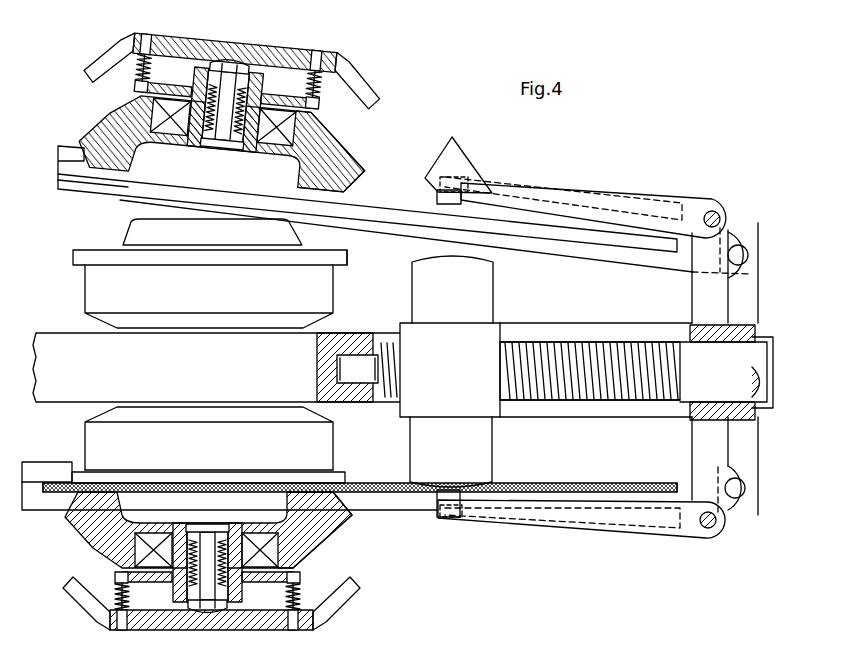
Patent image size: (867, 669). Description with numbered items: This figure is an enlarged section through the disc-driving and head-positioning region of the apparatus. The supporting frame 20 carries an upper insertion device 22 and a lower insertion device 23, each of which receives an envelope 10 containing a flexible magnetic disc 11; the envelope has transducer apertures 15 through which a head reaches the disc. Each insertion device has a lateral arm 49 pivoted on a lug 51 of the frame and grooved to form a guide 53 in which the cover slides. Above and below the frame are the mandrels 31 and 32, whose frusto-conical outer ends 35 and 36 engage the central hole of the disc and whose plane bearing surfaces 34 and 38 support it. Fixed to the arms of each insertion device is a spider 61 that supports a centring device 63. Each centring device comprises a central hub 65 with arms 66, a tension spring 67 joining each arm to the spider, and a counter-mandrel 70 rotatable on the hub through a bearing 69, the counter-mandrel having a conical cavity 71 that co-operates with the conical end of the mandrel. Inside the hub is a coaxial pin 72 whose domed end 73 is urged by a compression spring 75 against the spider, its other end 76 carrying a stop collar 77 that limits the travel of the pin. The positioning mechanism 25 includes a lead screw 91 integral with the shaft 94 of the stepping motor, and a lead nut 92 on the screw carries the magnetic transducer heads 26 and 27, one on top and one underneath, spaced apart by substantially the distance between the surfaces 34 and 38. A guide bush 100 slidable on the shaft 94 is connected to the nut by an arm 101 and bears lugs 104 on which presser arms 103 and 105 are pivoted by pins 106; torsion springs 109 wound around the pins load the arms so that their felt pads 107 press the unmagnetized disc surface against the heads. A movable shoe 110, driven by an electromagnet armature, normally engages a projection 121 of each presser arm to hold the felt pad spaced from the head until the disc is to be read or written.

The envelope 10 is at (662, 482).
The magnetic disc 11 is at (567, 481).
The transducer apertures 15 is at (643, 497).
The supporting frame 20 is at (50, 347).
The insertion device 22 is at (56, 136).
The insertion device 23 is at (41, 455).
The positioning mechanism 25 is at (690, 184).
The magnetic transducer head 26 is at (487, 273).
The magnetic transducer head 27 is at (482, 437).
The mandrel 31 is at (90, 258).
The mandrel 32 is at (80, 478).
The plane bearing surface 34 is at (348, 253).
The outer end 35 is at (293, 233).
The outer end 36 is at (130, 498).
The plane bearing surface 38 is at (315, 482).
The lateral arm 49 is at (393, 231).
The lug 51 is at (765, 255).
The guide 53 is at (60, 176).
The spider 61 is at (160, 631).
The centring device 63 is at (253, 335).
The central hub 65 is at (240, 525).
The arm 66 is at (267, 583).
The tension spring 67 is at (297, 598).
The bearing 69 is at (157, 545).
The counter-mandrel 70 is at (340, 520).
The conical cavity 71 is at (130, 516).
The coaxial pin 72 is at (232, 608).
The domed end 73 is at (208, 613).
The compression spring 75 is at (224, 540).
The end 76 is at (210, 533).
The stop collar 77 is at (196, 526).
The lead screw 91 is at (587, 400).
The lead nut 92 is at (410, 410).
The shaft 94 is at (690, 388).
The guide bush 100 is at (700, 327).
The arm 101 is at (567, 332).
The presser arm 103 is at (580, 203).
The lug 104 is at (700, 283).
The presser arm 105 is at (588, 518).
The pin 106 is at (712, 209).
The felt pad 107 is at (437, 193).
The torsion spring 109 is at (657, 201).
The movable shoe 110 is at (460, 162).
The projection 121 is at (443, 173).